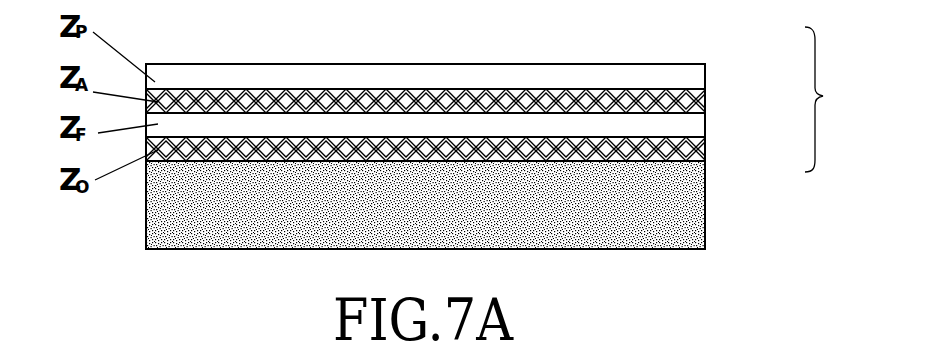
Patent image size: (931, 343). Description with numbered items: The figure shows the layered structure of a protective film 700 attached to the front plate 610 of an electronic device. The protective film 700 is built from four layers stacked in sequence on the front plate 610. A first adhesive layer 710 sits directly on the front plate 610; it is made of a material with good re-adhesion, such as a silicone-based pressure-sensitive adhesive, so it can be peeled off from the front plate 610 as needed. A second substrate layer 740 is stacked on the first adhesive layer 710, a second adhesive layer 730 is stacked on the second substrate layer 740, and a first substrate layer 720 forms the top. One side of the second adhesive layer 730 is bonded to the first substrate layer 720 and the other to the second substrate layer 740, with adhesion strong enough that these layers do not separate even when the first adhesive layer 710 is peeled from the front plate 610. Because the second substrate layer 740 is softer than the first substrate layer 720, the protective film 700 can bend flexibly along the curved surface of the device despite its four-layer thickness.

The first substrate layer 720 is at (687, 75).
The second adhesive layer 730 is at (698, 102).
The second substrate layer 740 is at (697, 122).
The first adhesive layer 710 is at (700, 150).
The protective film 700 is at (835, 99).
The front plate 610 is at (697, 209).